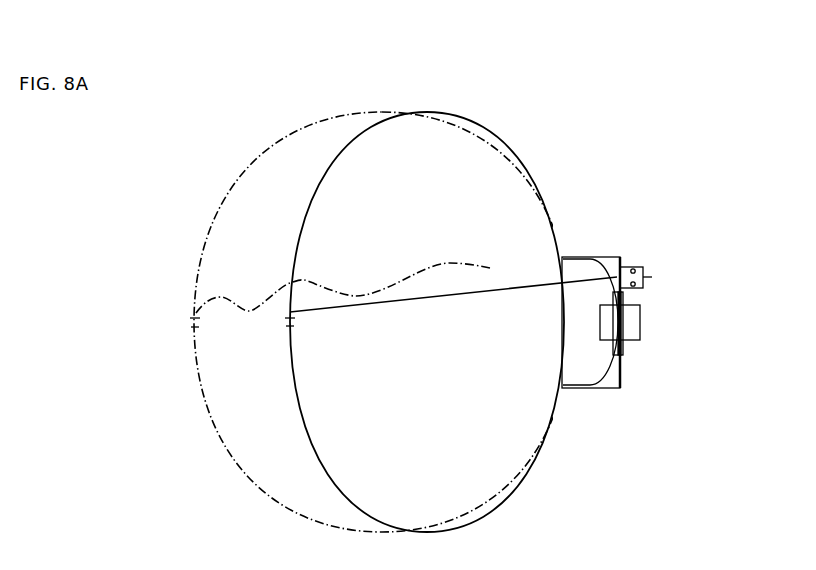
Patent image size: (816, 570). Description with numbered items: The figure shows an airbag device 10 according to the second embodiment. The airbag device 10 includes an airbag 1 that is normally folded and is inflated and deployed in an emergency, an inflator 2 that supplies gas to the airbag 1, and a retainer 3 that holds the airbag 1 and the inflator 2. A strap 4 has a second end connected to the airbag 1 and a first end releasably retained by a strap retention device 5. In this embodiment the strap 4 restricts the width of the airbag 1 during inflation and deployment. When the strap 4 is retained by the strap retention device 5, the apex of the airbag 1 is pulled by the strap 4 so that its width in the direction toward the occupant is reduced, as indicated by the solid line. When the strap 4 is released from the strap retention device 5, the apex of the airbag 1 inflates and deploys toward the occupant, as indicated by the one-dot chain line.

The airbag 1 is at (343, 113).
The inflator 2 is at (644, 322).
The retainer 3 is at (622, 385).
The strap 4 is at (416, 279).
The strap retention device 5 is at (650, 277).
The airbag device 10 is at (618, 179).